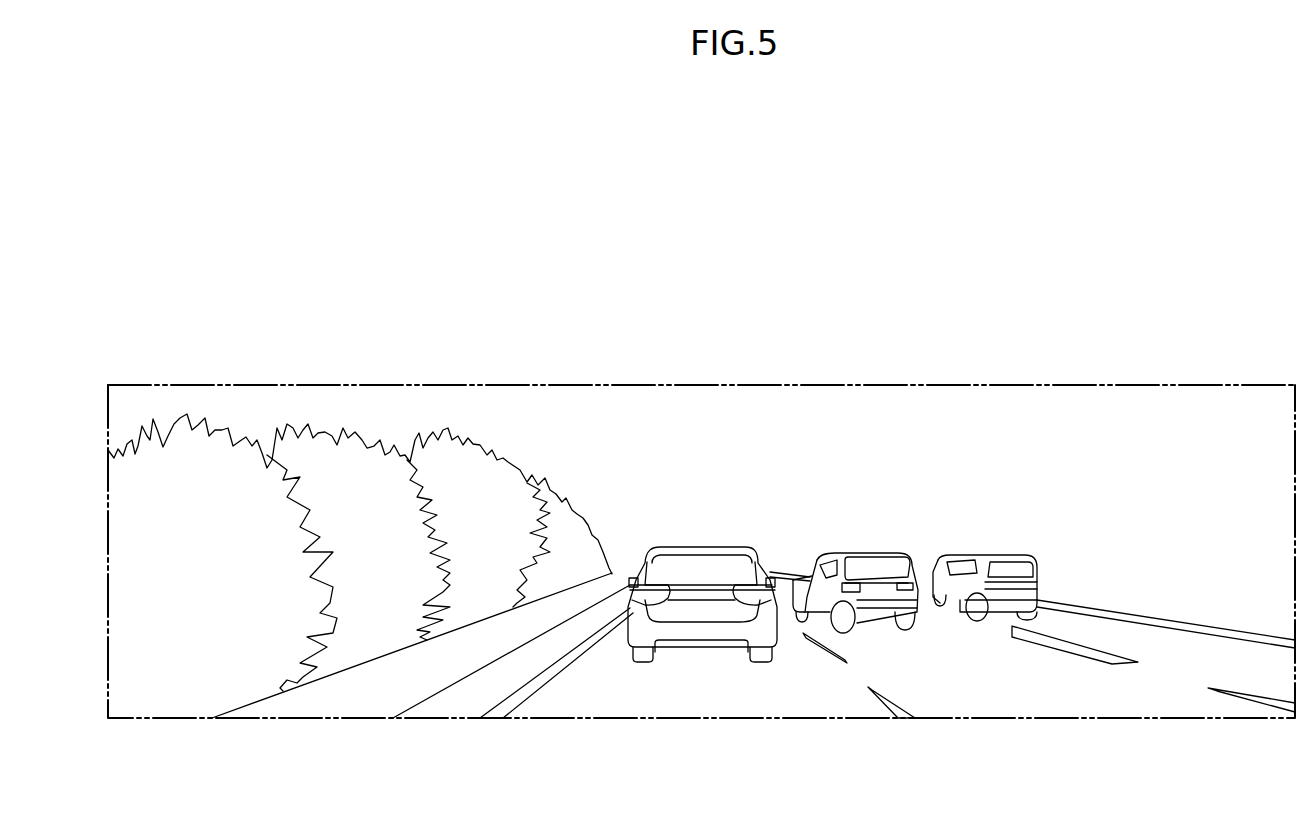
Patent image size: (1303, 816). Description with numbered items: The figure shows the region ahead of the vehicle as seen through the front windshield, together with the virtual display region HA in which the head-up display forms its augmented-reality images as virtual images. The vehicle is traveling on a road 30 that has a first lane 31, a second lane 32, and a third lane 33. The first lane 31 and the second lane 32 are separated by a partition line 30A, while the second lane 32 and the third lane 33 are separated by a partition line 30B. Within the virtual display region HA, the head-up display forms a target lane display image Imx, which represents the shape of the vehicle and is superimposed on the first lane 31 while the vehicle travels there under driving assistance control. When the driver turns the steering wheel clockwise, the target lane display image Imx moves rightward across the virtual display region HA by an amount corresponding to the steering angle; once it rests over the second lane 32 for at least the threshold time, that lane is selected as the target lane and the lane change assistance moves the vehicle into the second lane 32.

The road 30 is at (1148, 481).
The virtual display region HA is at (607, 385).
The first lane 31 is at (593, 683).
The second lane 32 is at (1045, 680).
The third lane 33 is at (1165, 647).
The partition line 30A is at (900, 707).
The partition line 30B is at (1105, 653).
The target lane display image Imx is at (965, 547).